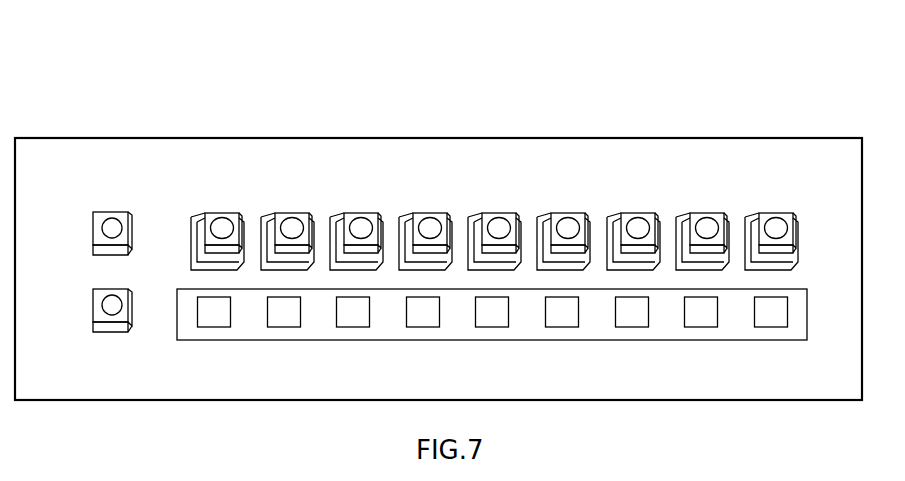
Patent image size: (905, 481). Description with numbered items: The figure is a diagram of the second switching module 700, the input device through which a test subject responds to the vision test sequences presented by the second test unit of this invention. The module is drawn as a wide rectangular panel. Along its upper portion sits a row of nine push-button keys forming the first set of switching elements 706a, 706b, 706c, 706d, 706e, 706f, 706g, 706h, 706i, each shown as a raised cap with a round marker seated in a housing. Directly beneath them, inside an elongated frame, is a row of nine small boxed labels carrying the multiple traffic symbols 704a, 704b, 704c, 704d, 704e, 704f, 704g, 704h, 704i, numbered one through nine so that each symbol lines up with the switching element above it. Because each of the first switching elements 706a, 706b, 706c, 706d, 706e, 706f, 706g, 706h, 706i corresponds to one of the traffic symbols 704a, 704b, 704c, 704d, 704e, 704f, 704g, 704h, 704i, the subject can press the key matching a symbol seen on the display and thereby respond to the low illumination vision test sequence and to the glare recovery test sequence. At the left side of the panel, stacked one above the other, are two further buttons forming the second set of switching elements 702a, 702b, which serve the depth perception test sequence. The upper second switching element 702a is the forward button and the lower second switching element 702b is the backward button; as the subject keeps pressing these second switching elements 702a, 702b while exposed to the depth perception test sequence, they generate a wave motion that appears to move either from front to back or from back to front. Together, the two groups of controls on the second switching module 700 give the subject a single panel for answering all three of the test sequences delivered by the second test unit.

The second switching module 700 is at (116, 44).
The second switching element 702a is at (113, 230).
The second switching element 702b is at (113, 306).
The traffic symbol 704a is at (214, 328).
The traffic symbol 704b is at (284, 328).
The traffic symbol 704c is at (353, 328).
The traffic symbol 704d is at (423, 328).
The traffic symbol 704e is at (492, 328).
The traffic symbol 704f is at (562, 328).
The traffic symbol 704g is at (632, 328).
The traffic symbol 704h is at (701, 328).
The traffic symbol 704i is at (771, 328).
The first switching element 706a is at (215, 212).
The first switching element 706b is at (285, 212).
The first switching element 706c is at (354, 212).
The first switching element 706d is at (423, 212).
The first switching element 706e is at (492, 212).
The first switching element 706f is at (561, 212).
The first switching element 706g is at (631, 212).
The first switching element 706h is at (700, 212).
The first switching element 706i is at (769, 212).